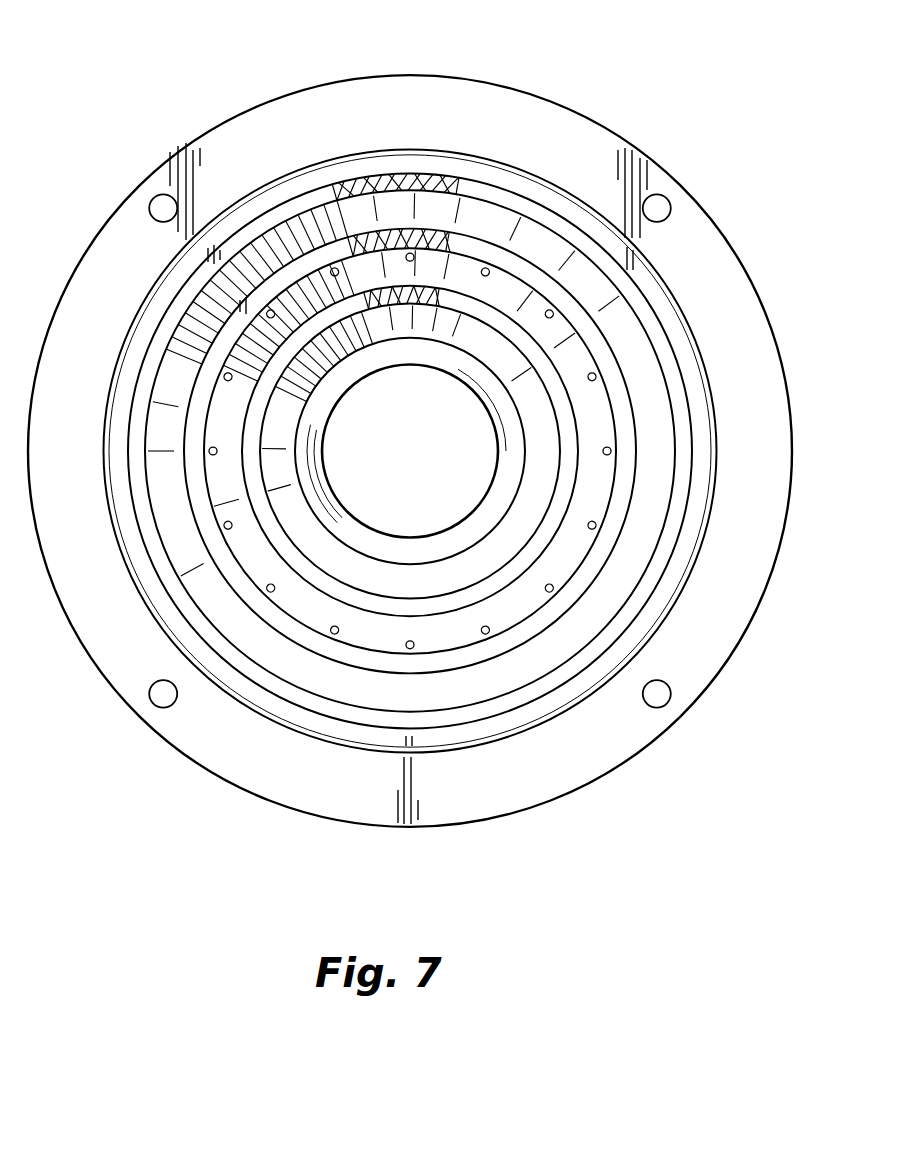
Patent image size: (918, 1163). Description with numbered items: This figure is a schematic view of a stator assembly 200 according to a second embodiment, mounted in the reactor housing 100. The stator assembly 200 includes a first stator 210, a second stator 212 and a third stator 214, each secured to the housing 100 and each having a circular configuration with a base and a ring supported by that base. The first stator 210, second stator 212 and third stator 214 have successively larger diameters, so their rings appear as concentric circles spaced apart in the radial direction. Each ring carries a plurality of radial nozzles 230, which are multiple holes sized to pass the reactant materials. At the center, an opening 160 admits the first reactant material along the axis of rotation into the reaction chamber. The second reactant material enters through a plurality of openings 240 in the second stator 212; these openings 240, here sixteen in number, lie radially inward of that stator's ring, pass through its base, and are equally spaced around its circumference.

The reactor housing 100 is at (584, 116).
The stator assembly 200 is at (484, 147).
The first stator 210 is at (542, 350).
The second stator 212 is at (618, 367).
The third stator 214 is at (683, 382).
The radial nozzles 230 is at (368, 290).
The openings 240 is at (263, 317).
The opening 160 is at (440, 445).